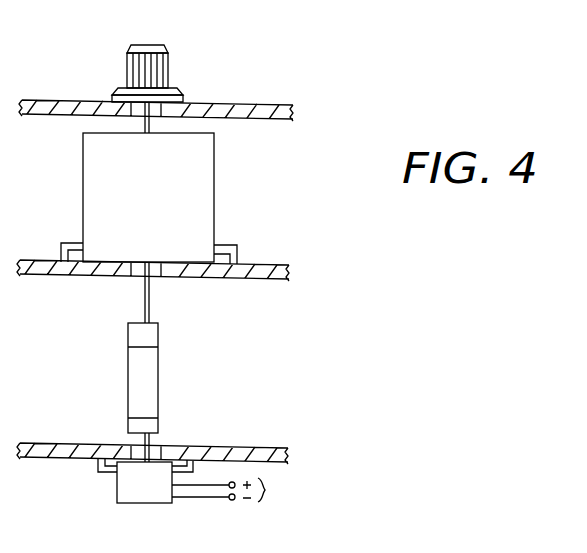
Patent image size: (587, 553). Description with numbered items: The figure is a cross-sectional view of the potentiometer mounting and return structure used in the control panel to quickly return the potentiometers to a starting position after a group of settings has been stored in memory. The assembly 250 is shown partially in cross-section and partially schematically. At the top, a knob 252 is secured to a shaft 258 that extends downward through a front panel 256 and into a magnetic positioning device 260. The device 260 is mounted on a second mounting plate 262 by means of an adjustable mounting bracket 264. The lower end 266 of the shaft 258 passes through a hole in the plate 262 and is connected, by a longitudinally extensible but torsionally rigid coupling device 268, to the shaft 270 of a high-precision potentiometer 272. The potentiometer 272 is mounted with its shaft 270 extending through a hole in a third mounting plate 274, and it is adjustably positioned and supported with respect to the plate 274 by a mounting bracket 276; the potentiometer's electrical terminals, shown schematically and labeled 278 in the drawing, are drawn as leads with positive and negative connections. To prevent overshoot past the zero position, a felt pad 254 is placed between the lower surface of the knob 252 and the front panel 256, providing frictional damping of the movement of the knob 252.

The assembly 250 is at (232, 86).
The knob 252 is at (170, 63).
The felt pad 254 is at (168, 97).
The front panel 256 is at (62, 100).
The shaft 258 is at (151, 124).
The magnetic positioning device 260 is at (170, 207).
The second mounting plate 262 is at (277, 265).
The adjustable mounting bracket 264 is at (238, 250).
The lower end of the shaft 266 is at (150, 302).
The coupling device 268 is at (159, 365).
The potentiometer shaft 270 is at (150, 441).
The high-precision potentiometer 272 is at (141, 505).
The third mounting plate 274 is at (243, 445).
The mounting bracket 276 is at (107, 473).
The terminal leads 278 is at (240, 490).